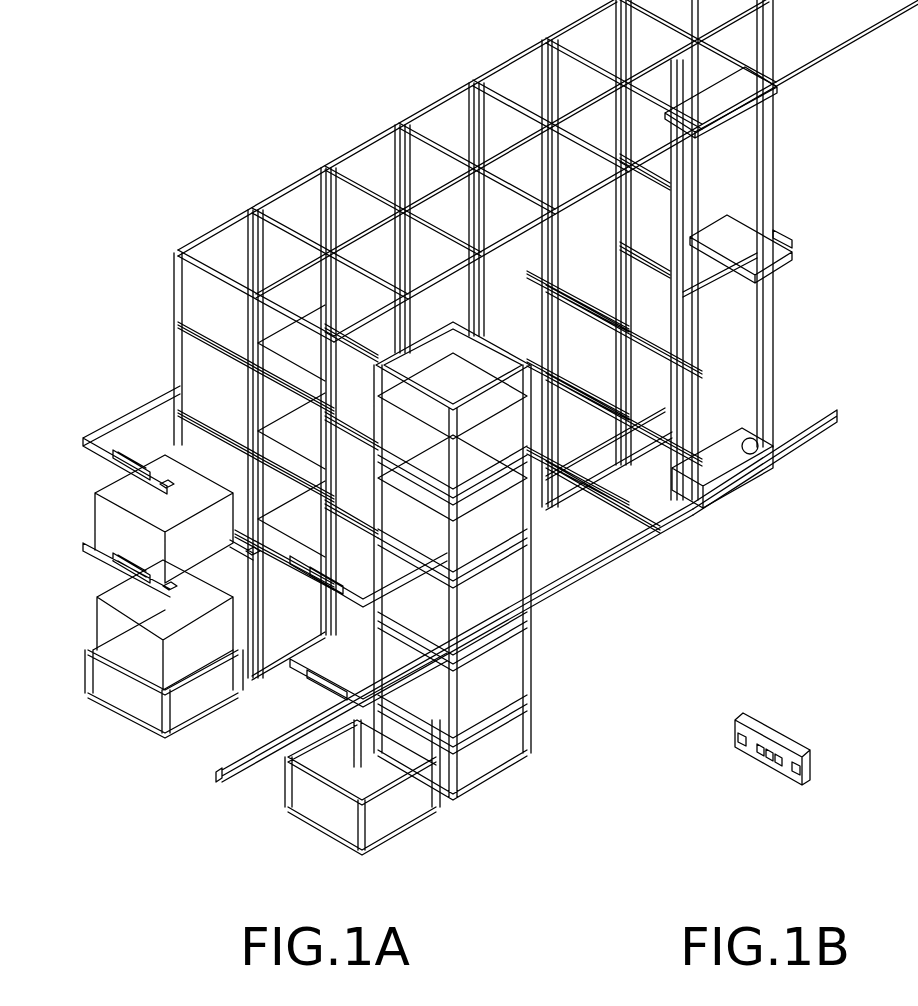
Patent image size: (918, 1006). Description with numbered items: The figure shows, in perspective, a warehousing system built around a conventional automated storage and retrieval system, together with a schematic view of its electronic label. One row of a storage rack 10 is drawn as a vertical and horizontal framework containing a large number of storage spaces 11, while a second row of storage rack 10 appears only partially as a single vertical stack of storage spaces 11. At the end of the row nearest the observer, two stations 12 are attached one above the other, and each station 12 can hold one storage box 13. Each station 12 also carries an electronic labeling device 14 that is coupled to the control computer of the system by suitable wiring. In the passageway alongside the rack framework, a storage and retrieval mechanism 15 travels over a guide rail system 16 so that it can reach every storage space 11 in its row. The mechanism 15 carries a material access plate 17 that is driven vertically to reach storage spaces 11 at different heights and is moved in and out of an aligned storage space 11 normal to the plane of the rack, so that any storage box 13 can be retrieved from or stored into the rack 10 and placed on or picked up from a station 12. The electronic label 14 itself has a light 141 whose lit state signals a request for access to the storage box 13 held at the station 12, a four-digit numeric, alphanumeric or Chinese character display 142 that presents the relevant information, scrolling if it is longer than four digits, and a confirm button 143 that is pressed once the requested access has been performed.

In FIG. 1A, the storage rack 10 is at (471, 68).
In FIG. 1A, the storage space 11 is at (338, 298).
In FIG. 1A, the station 12 is at (207, 722).
In FIG. 1A, the storage box 13 is at (105, 517).
In FIG. 1A, the electronic labeling device 14 is at (127, 455).
In FIG. 1B, the electronic labeling device 14 is at (791, 729).
In FIG. 1B, the light 141 is at (738, 734).
In FIG. 1B, the display 142 is at (760, 762).
In FIG. 1B, the confirm button 143 is at (792, 773).
In FIG. 1A, the storage and retrieval mechanism 15 is at (773, 422).
In FIG. 1A, the guide rail system 16 is at (627, 553).
In FIG. 1A, the material access plate 17 is at (792, 251).